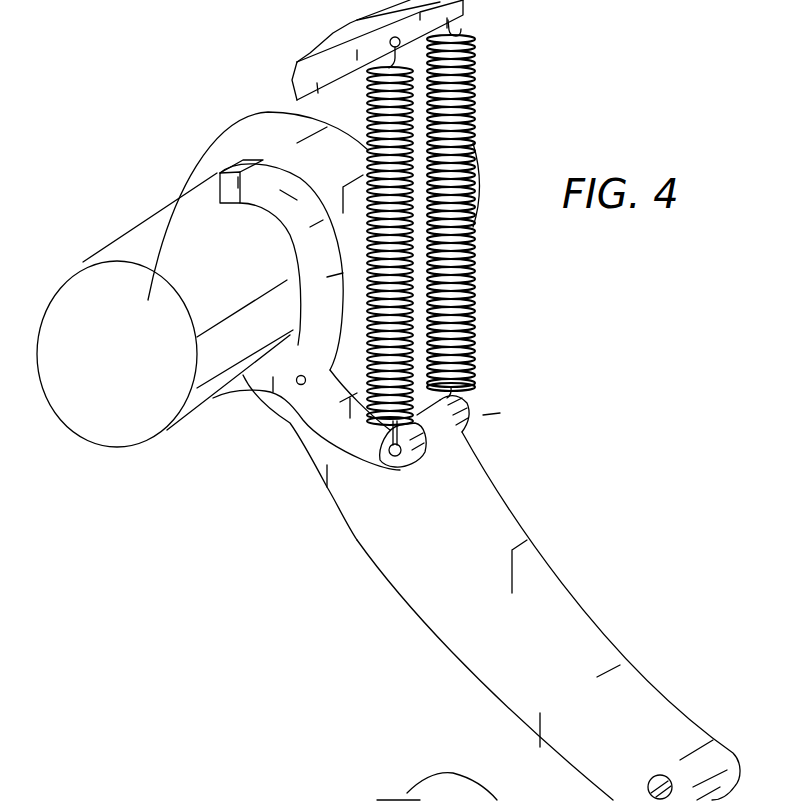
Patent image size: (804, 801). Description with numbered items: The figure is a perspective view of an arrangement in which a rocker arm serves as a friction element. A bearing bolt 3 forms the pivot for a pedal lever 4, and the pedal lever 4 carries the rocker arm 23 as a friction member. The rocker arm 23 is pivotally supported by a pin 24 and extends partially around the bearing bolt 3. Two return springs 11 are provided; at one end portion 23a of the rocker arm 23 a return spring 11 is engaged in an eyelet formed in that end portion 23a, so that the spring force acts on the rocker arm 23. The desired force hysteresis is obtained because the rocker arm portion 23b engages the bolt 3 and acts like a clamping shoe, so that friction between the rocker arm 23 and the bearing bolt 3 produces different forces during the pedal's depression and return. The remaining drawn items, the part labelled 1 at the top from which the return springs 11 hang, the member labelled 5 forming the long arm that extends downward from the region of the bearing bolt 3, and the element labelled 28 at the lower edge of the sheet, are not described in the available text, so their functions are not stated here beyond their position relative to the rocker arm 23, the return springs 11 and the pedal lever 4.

The support clip 1 is at (296, 80).
The bearing bolt 3 is at (67, 387).
The pedal lever 4 is at (483, 415).
The lever arm 5 is at (540, 607).
The return springs 11 is at (417, 333).
The rocker arm 23 is at (238, 205).
The end portion of the rocker arm 23a is at (330, 420).
The rocker arm portion 23b is at (293, 237).
The pin 24 is at (298, 385).
The stop member 28 is at (385, 800).